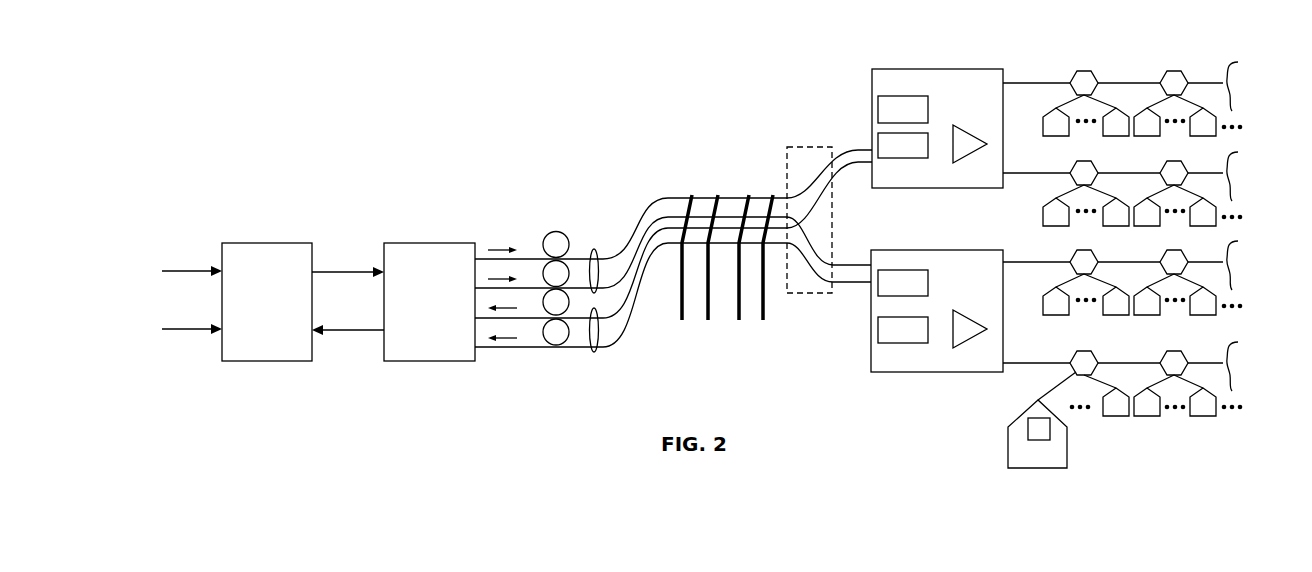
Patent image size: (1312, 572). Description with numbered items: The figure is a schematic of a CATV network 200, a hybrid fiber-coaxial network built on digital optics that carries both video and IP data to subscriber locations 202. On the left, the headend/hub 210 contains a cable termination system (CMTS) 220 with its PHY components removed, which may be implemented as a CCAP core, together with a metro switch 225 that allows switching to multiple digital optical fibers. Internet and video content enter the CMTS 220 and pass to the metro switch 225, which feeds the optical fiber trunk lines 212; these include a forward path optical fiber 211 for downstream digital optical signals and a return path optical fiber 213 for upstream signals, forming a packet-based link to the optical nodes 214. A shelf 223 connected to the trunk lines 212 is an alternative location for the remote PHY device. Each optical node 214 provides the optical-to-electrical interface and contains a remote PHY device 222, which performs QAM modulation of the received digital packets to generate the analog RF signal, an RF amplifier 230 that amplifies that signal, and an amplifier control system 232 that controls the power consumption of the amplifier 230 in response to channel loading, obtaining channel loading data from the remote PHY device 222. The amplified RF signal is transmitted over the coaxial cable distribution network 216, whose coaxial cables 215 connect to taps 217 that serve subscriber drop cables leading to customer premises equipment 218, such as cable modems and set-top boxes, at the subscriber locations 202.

The CATV network 200 is at (272, 131).
The subscriber locations 202 is at (1113, 133).
The headend/hub 210 is at (473, 201).
The forward path optical fiber 211 is at (595, 250).
The optical fiber trunk lines 212 is at (473, 143).
The return path optical fiber 213 is at (594, 353).
The optical node 214 is at (924, 68).
The coaxial cables 215 is at (1043, 85).
The coaxial cable distribution network 216 is at (1238, 55).
The taps 217 is at (1096, 89).
The customer premises equipment 218 is at (1028, 428).
The cable termination system (CMTS) 220 is at (258, 361).
The remote PHY device 222 is at (877, 102).
The shelf 223 is at (786, 172).
The metro switch 225 is at (425, 361).
The RF amplifier 230 is at (968, 163).
The amplifier control system 232 is at (895, 158).